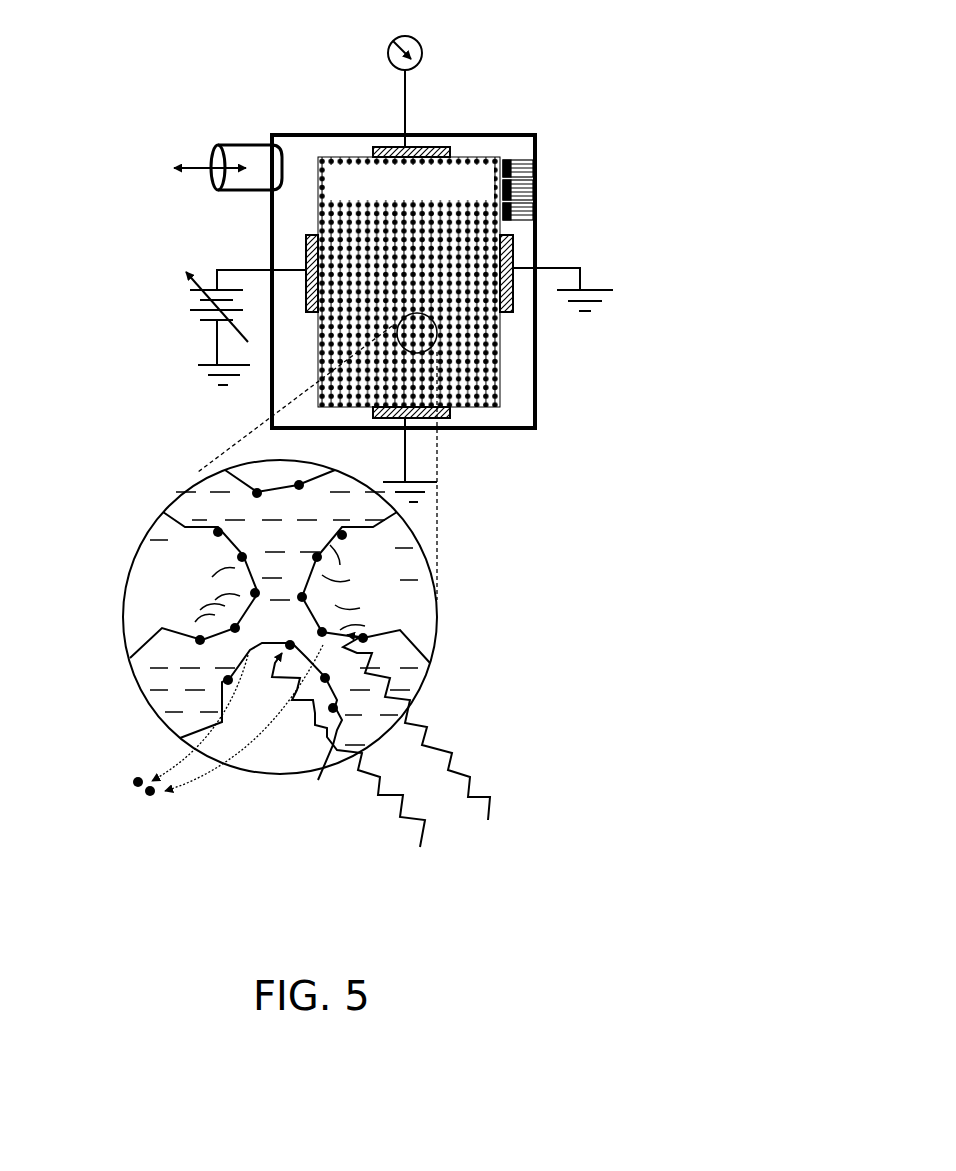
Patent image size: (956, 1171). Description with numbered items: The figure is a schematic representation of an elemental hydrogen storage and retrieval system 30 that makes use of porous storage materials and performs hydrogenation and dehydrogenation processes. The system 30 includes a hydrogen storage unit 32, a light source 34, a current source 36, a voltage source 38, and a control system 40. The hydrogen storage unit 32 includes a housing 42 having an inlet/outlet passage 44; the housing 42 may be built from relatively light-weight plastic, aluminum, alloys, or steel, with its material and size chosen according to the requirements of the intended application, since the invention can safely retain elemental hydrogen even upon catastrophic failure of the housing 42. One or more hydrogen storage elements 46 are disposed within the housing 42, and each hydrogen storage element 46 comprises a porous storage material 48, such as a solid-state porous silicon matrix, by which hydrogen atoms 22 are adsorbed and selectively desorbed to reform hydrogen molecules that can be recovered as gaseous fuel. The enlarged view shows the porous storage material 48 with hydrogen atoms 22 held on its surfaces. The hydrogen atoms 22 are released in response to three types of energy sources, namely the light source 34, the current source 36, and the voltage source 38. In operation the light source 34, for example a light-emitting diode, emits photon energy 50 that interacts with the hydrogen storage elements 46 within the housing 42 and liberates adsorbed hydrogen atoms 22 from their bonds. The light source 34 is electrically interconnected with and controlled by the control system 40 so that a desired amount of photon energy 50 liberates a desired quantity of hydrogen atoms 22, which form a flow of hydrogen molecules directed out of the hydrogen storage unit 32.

The hydrogen atoms 22 is at (133, 825).
The hydrogen storage and retrieval system 30 is at (578, 72).
The hydrogen storage unit 32 is at (548, 340).
The light source 34 is at (420, 147).
The current source 36 is at (515, 246).
The voltage source 38 is at (182, 302).
The control system 40 is at (537, 160).
The housing 42 is at (537, 423).
The inlet/outlet passage 44 is at (254, 158).
The hydrogen storage element 46 is at (503, 363).
The porous storage material 48 is at (410, 198).
The photon energy 50 is at (381, 744).